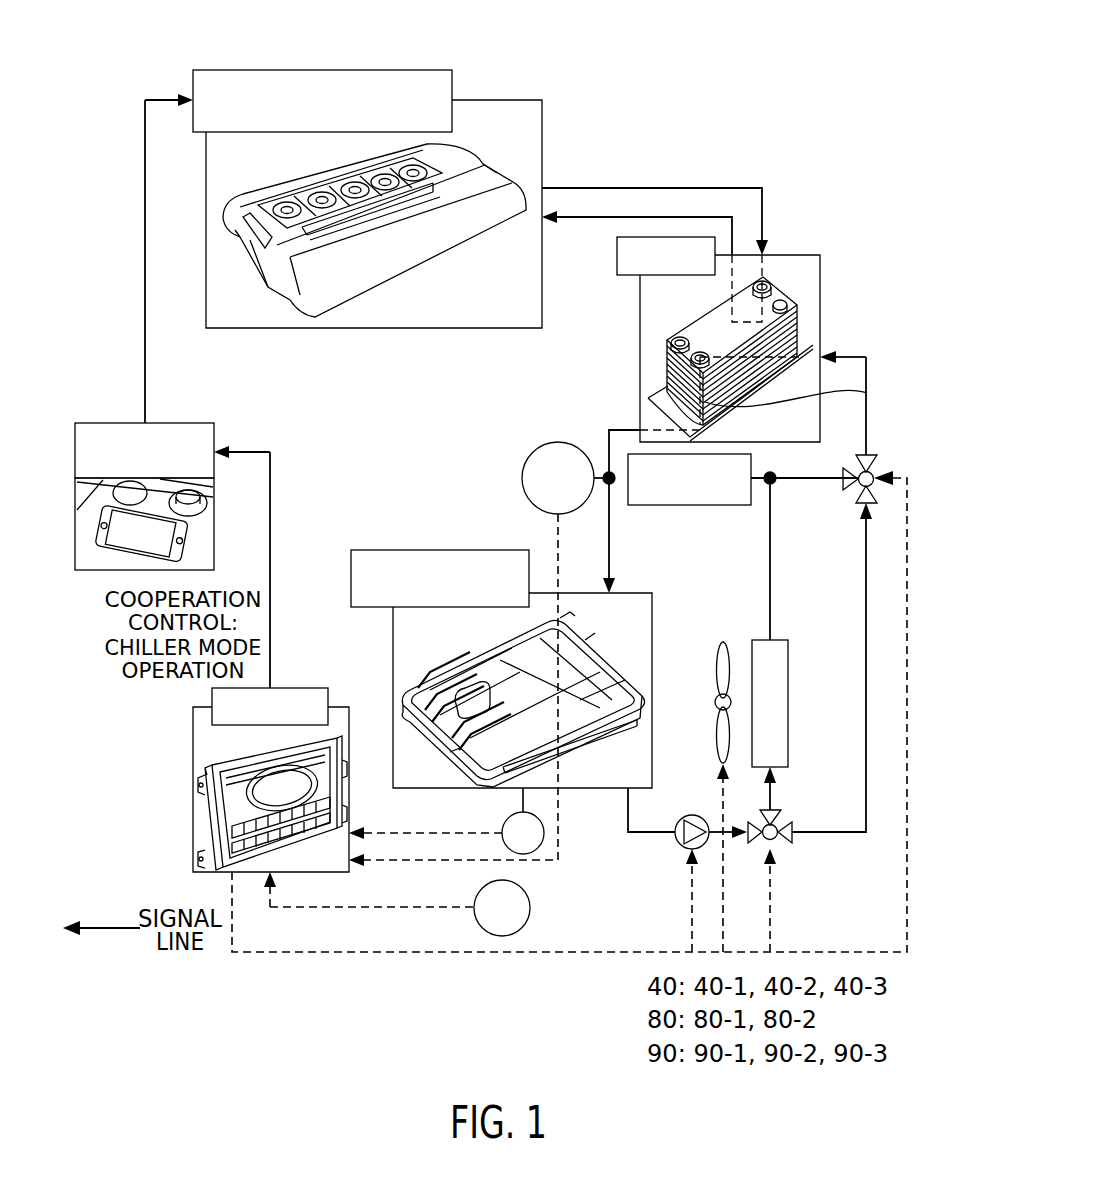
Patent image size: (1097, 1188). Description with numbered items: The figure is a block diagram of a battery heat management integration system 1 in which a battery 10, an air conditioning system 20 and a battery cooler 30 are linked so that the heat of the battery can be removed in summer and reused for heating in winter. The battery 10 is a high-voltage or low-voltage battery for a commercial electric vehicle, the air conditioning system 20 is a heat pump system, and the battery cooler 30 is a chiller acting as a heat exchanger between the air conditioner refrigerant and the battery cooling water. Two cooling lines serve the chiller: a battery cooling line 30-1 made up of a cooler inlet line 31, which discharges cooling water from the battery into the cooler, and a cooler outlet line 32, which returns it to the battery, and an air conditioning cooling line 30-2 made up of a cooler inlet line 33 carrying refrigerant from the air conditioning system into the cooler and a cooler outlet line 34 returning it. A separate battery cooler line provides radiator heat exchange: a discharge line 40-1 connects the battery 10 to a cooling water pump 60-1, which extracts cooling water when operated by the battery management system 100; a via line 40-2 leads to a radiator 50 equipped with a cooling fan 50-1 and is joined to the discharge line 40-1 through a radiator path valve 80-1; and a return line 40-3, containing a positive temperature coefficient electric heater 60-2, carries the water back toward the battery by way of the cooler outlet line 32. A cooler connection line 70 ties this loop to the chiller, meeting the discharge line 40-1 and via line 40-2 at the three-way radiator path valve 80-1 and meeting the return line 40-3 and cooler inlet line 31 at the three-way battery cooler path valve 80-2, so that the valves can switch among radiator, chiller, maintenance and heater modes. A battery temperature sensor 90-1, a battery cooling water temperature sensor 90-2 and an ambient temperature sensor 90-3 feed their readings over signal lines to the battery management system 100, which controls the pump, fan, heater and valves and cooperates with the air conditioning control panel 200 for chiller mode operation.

The battery heat management integration system 1 is at (752, 96).
The battery 10 is at (357, 548).
The air conditioning system 20 is at (303, 68).
The battery cooler 30 is at (635, 237).
The battery cooling line 30-1 is at (651, 348).
The cooler inlet line 31 is at (680, 378).
The cooler outlet line 32 is at (622, 428).
The air conditioning cooling line 30-2 is at (733, 215).
The cooler inlet line 33 is at (762, 195).
The cooler outlet line 34 is at (732, 220).
The discharge line 40-1 is at (628, 845).
The via line 40-2 is at (772, 790).
The return line 40-3 is at (803, 485).
The radiator 50 is at (788, 672).
The cooling fan 50-1 is at (723, 735).
The cooling water pump 60-1 is at (685, 848).
The electric heater 60-2 is at (710, 505).
The cooler connection line 70 is at (866, 746).
The radiator path valve 80-1 is at (785, 845).
The battery cooler path valve 80-2 is at (873, 455).
The battery temperature sensor 90-1 is at (503, 826).
The battery cooling water temperature sensor 90-2 is at (522, 478).
The ambient temperature sensor 90-3 is at (500, 936).
The battery management system 100 is at (193, 752).
The air conditioning control panel 200 is at (110, 423).